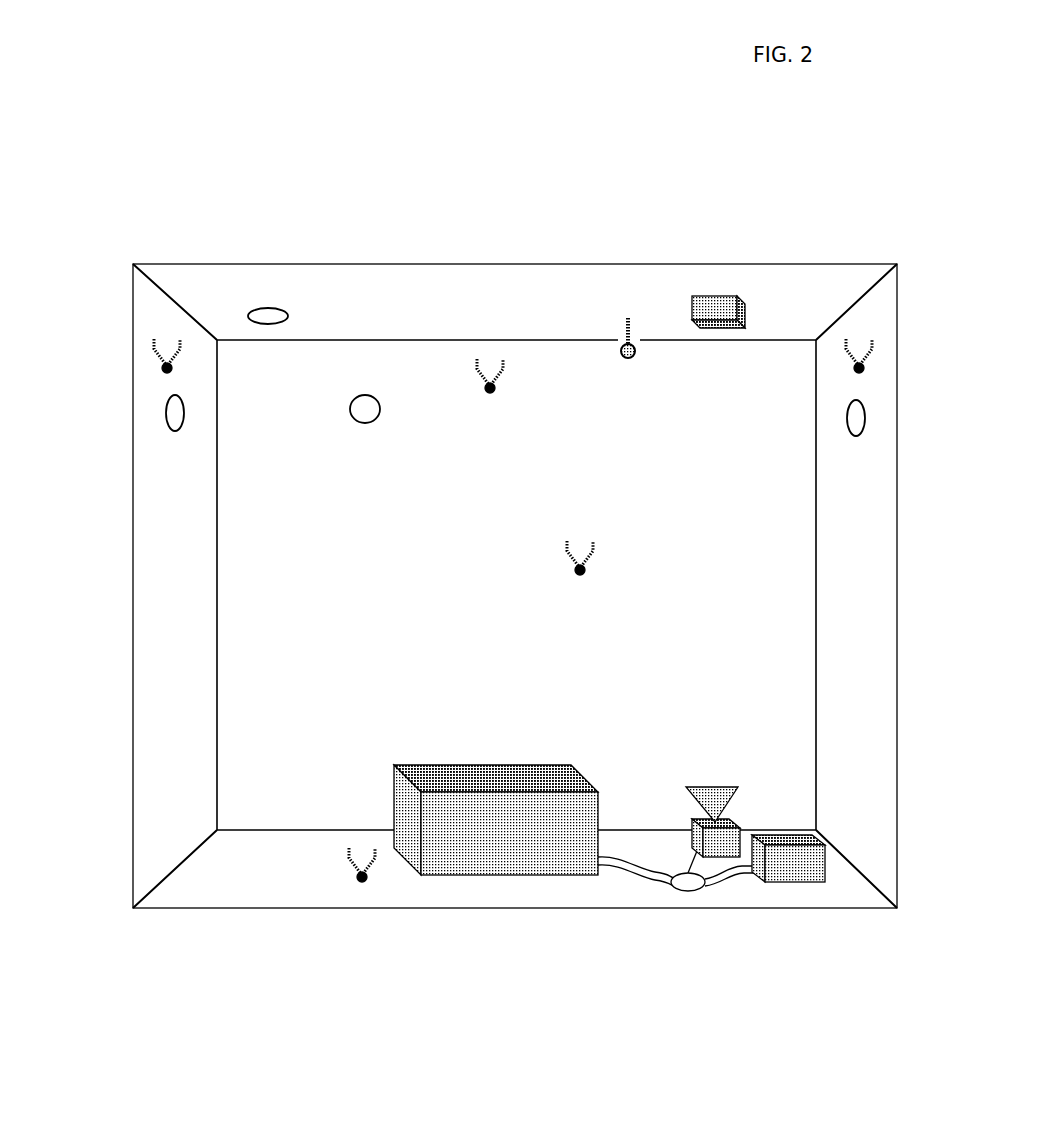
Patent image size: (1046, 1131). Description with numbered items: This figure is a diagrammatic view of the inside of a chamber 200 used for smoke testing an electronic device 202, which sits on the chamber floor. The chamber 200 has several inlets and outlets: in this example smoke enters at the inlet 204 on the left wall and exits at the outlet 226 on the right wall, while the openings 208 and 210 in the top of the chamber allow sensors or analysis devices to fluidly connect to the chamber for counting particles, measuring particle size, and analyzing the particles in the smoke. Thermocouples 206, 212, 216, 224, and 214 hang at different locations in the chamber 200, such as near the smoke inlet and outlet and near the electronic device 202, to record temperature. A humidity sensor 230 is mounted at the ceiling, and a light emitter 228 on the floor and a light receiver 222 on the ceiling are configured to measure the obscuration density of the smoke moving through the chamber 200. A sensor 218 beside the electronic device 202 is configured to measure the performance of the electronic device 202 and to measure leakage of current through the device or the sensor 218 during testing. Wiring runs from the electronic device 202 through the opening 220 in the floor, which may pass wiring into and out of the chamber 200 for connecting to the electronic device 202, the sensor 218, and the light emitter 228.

The chamber 200 is at (599, 86).
The electronic device 202 is at (510, 853).
The inlet 204 is at (175, 431).
The thermocouple 206 is at (163, 357).
The opening 208 is at (265, 308).
The opening 210 is at (365, 395).
The thermocouple 212 is at (489, 375).
The thermocouple 214 is at (363, 883).
The thermocouple 216 is at (587, 547).
The sensor 218 is at (795, 882).
The opening 220 is at (688, 889).
The light receiver 222 is at (712, 296).
The thermocouple 224 is at (855, 360).
The outlet 226 is at (866, 415).
The light emitter 228 is at (716, 787).
The humidity sensor 230 is at (628, 318).